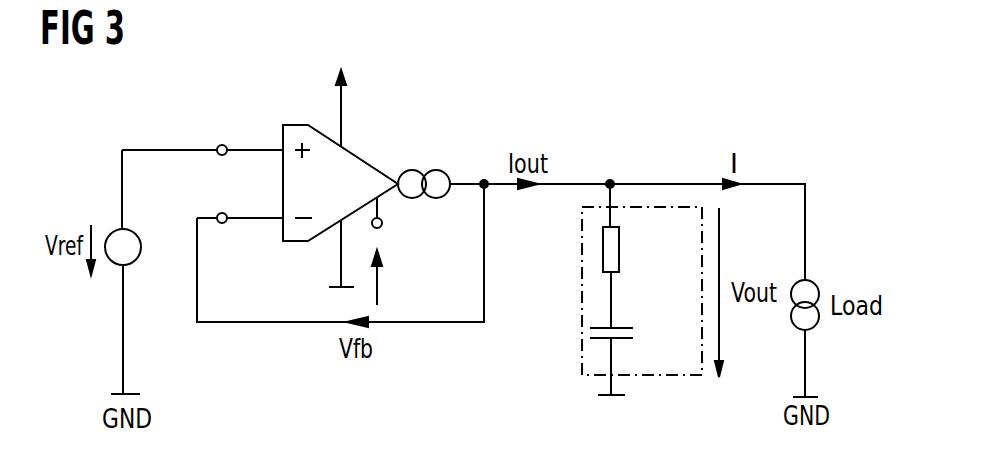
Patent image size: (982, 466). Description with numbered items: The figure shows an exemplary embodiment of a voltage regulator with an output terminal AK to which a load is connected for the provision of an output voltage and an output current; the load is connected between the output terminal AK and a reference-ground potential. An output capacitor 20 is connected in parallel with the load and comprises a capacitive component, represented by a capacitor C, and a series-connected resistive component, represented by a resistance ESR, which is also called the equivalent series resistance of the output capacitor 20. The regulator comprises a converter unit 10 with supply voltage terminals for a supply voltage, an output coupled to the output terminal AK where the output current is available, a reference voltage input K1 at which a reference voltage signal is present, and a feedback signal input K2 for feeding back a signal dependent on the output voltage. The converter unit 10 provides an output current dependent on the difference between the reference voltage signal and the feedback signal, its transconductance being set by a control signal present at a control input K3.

The converter unit 10 is at (366, 171).
The output capacitor 20 is at (612, 309).
The first input terminal (non-inverting input) K1 is at (245, 133).
The feedback signal input K2 is at (340, 255).
The control input K3 is at (408, 251).
The output terminal AK is at (610, 179).
The resistance ESR is at (619, 250).
The capacitor C is at (636, 333).